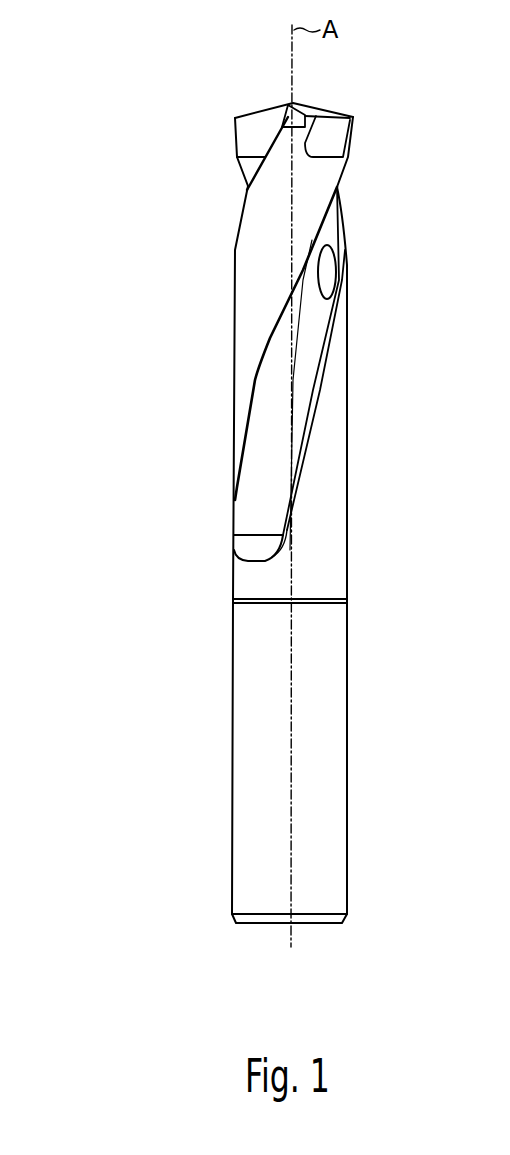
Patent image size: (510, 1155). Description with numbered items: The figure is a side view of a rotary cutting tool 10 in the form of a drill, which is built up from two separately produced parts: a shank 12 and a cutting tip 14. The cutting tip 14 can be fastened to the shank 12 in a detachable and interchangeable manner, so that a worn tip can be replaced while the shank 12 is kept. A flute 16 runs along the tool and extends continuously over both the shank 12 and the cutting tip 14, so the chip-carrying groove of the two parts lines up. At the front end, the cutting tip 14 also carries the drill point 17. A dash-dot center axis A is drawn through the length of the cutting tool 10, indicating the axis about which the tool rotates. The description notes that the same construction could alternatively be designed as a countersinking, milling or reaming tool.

The rotary cutting tool 10 is at (186, 396).
The shank 12 is at (347, 512).
The cutting tip 14 is at (325, 118).
The flute 16 is at (318, 327).
The drill point 17 is at (293, 100).